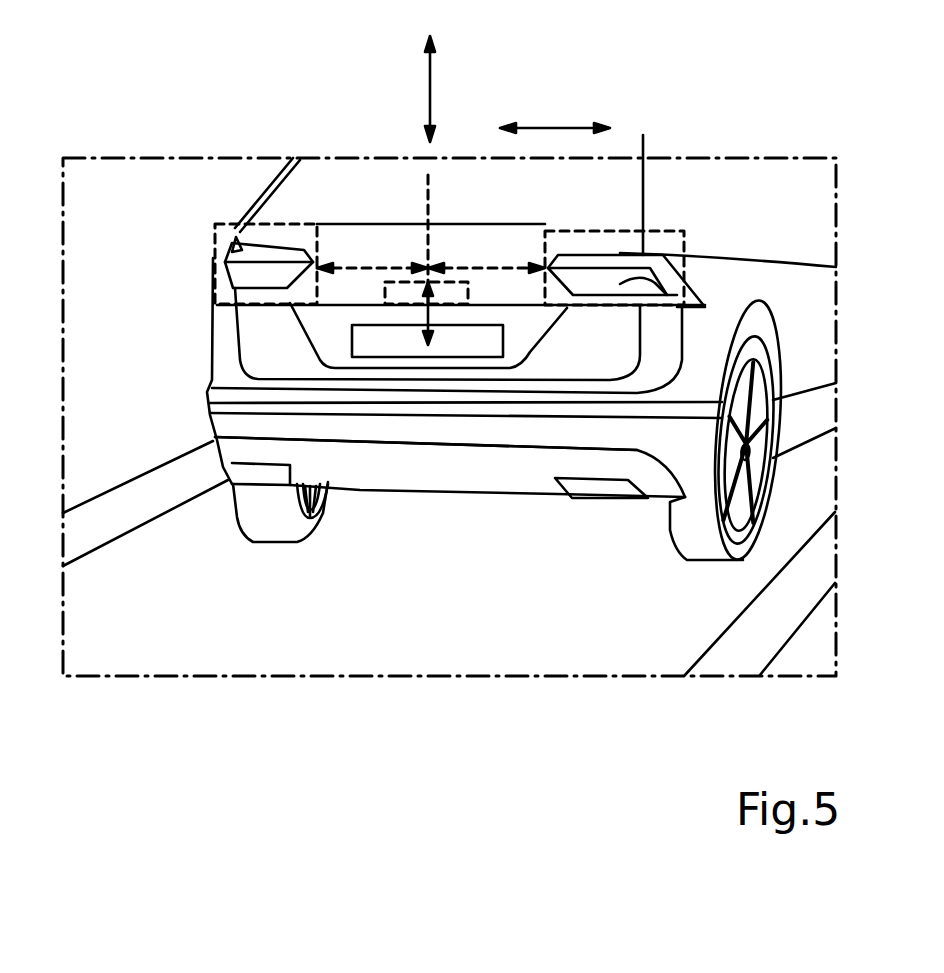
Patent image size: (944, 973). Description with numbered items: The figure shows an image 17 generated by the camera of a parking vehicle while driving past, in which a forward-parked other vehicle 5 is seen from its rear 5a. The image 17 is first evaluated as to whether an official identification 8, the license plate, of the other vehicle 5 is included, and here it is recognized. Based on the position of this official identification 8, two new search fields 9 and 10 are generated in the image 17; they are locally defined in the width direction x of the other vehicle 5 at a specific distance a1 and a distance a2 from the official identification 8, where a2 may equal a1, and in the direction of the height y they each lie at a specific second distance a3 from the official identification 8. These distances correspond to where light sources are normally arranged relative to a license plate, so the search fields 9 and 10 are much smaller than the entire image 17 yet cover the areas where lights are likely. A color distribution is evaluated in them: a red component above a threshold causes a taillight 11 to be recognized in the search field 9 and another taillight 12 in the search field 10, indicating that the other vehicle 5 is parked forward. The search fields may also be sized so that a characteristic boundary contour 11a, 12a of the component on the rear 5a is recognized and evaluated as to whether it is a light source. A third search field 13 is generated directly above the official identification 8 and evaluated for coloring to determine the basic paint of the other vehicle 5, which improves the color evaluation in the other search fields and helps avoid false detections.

The other vehicle 5 is at (492, 312).
The rear 5a is at (268, 317).
The official identification 8 is at (450, 358).
The search field 9 is at (213, 252).
The search field 10 is at (684, 232).
The taillight 11 is at (277, 277).
The boundary contour 11a is at (290, 250).
The taillight 12 is at (677, 285).
The boundary contour 12a is at (597, 247).
The third search field 13 is at (387, 288).
The image 17 is at (562, 613).
The distance a1 is at (368, 262).
The distance a2 is at (485, 270).
The second distance a3 is at (427, 313).
The width direction x is at (559, 126).
The height direction y is at (433, 92).